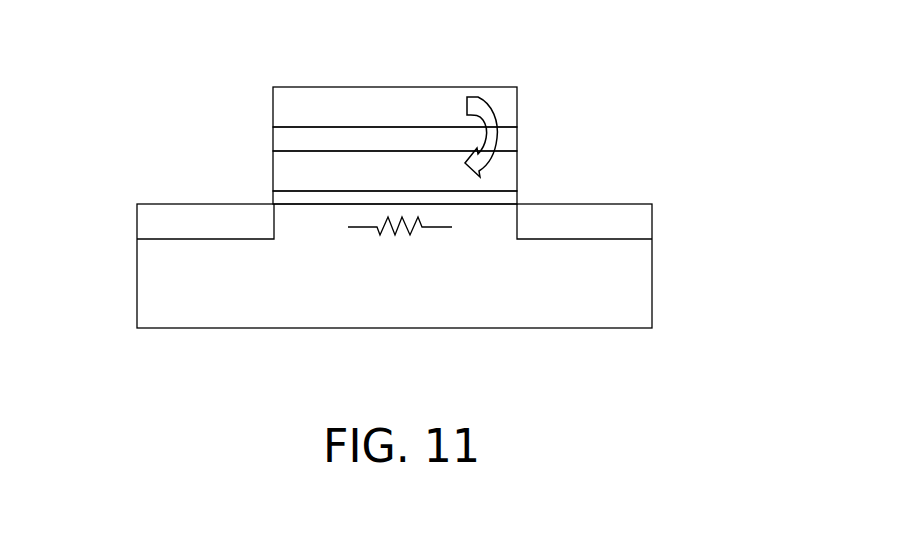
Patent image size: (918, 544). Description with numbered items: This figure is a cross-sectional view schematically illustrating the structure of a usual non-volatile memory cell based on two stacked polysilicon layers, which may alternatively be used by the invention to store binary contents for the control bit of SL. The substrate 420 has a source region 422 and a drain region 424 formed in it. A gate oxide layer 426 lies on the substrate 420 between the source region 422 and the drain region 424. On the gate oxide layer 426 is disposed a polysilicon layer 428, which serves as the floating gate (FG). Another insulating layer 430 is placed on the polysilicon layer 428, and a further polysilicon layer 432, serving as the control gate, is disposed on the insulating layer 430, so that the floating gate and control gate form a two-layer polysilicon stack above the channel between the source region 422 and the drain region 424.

The substrate 420 is at (610, 284).
The source region 422 is at (613, 223).
The drain region 424 is at (173, 223).
The gate oxide layer 426 is at (500, 198).
The polysilicon layer 428 is at (503, 177).
The insulating layer 430 is at (503, 140).
The polysilicon layer 432 is at (503, 98).